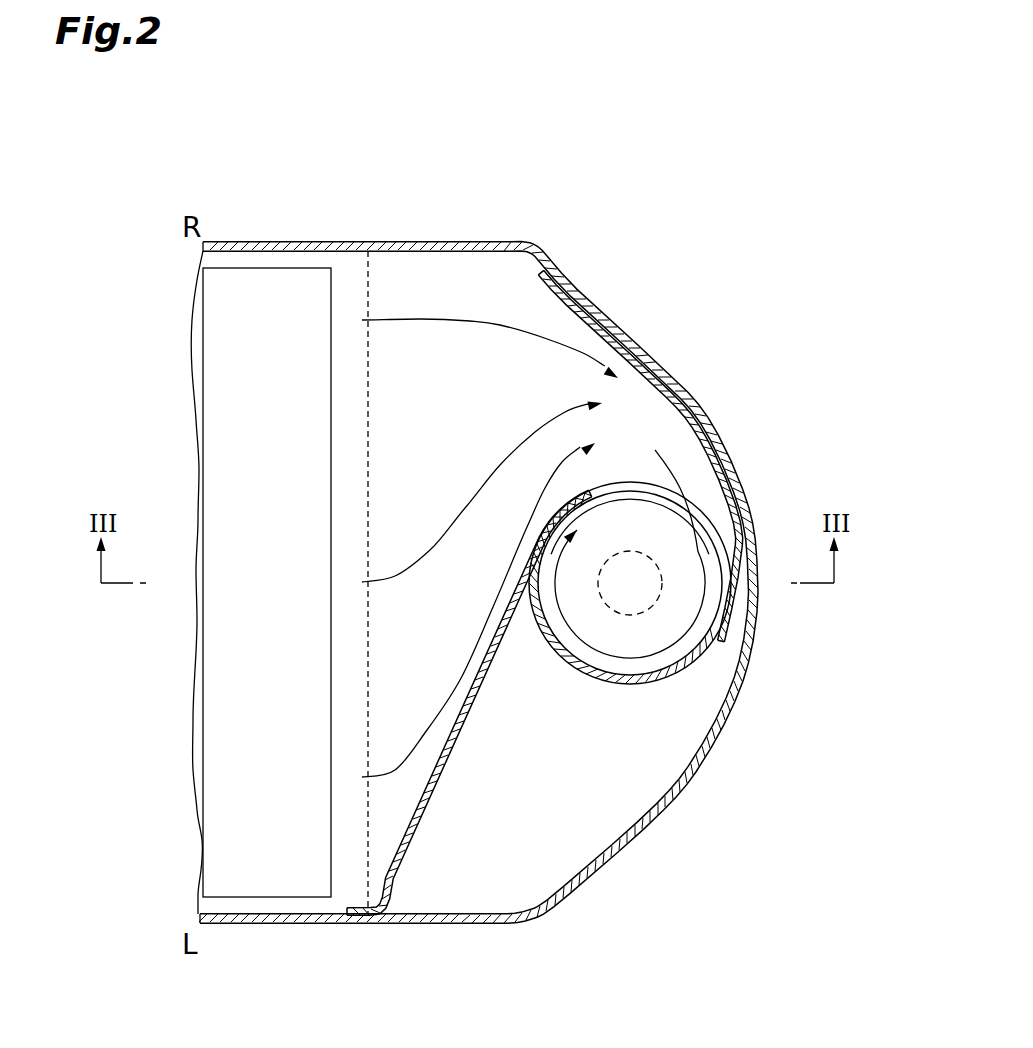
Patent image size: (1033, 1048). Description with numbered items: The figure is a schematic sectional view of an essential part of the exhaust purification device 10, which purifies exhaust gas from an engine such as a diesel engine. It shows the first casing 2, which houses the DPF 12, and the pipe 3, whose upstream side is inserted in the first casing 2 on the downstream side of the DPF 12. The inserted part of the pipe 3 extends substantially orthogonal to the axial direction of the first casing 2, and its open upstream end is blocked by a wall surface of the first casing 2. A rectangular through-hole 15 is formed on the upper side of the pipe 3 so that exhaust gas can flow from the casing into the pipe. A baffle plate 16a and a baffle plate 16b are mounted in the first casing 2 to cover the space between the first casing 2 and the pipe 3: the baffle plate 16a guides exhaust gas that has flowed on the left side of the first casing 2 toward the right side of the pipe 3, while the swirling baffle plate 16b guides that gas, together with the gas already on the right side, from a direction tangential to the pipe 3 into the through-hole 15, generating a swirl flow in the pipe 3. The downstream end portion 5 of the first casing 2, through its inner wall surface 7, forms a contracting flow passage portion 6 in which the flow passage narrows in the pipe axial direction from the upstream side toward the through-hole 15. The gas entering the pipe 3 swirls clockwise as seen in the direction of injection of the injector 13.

The first casing 2 is at (307, 236).
The pipe 3 is at (648, 694).
The downstream end portion 5 is at (452, 242).
The contracting flow passage portion 6 is at (455, 432).
The inner wall surface 7 is at (386, 252).
The exhaust purification device 10 is at (656, 172).
The DPF 12 is at (263, 270).
The injector 13 is at (663, 587).
The through-hole 15 is at (628, 485).
The baffle plate 16a is at (560, 292).
The baffle plate 16b is at (430, 813).